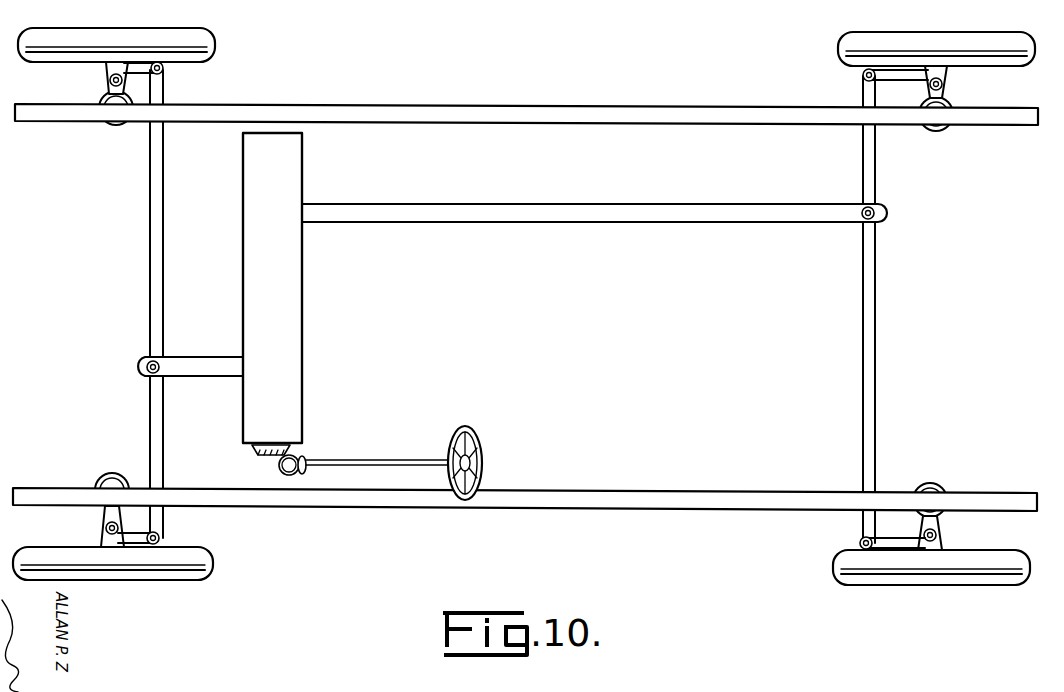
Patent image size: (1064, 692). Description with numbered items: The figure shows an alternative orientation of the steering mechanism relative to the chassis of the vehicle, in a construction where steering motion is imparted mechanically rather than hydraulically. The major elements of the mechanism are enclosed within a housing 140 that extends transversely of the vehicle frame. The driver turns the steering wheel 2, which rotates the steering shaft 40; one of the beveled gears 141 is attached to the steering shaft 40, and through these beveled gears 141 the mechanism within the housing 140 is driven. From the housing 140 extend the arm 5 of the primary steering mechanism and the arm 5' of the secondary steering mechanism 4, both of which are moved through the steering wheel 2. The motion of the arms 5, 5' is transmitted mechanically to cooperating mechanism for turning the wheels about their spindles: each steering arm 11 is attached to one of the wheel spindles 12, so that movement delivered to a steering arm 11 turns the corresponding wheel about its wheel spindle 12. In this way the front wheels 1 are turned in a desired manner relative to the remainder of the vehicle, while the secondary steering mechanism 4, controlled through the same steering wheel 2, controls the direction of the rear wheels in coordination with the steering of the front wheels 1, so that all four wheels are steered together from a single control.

The front wheels 1 is at (213, 42).
The steering wheel 2 is at (456, 432).
The secondary steering mechanism 4 is at (345, 195).
The arm of primary steering mechanism 5 is at (506, 318).
The arm of secondary steering mechanism 5' is at (594, 230).
The steering arm 11 is at (136, 540).
The wheel spindle 12 is at (106, 540).
The steering shaft 40 is at (373, 460).
The housing 140 is at (288, 337).
The beveled gears 141 is at (256, 450).